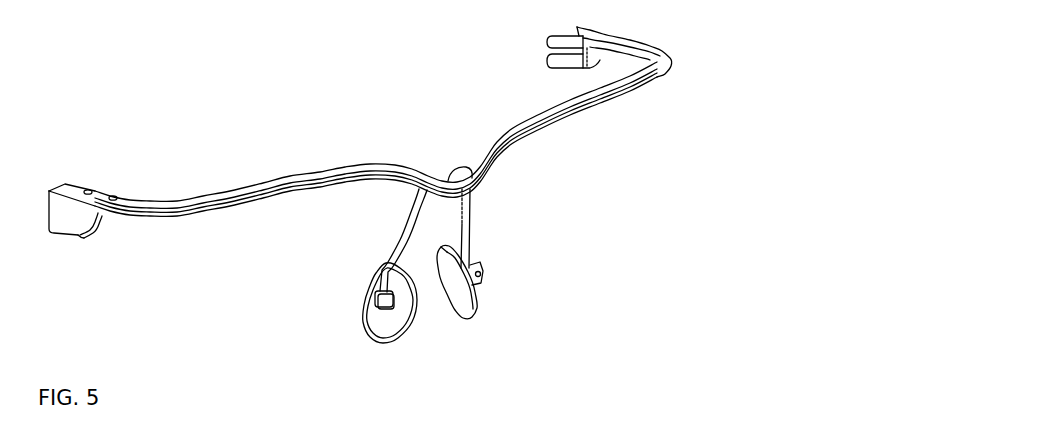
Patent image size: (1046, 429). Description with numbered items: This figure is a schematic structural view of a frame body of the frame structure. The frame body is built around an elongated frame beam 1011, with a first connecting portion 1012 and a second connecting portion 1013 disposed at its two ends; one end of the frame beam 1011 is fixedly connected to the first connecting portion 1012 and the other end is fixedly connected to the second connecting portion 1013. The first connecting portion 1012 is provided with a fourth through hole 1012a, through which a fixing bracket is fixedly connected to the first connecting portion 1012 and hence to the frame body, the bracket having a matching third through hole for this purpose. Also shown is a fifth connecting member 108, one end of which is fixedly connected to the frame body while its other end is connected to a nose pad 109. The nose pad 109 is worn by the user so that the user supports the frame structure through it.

The frame beam 1011 is at (273, 193).
The first connecting portion 1012 is at (77, 210).
The fourth through hole 1012a is at (92, 188).
The second connecting portion 1013 is at (627, 43).
The fifth connecting member 108 is at (470, 227).
The nose pad 109 is at (465, 295).